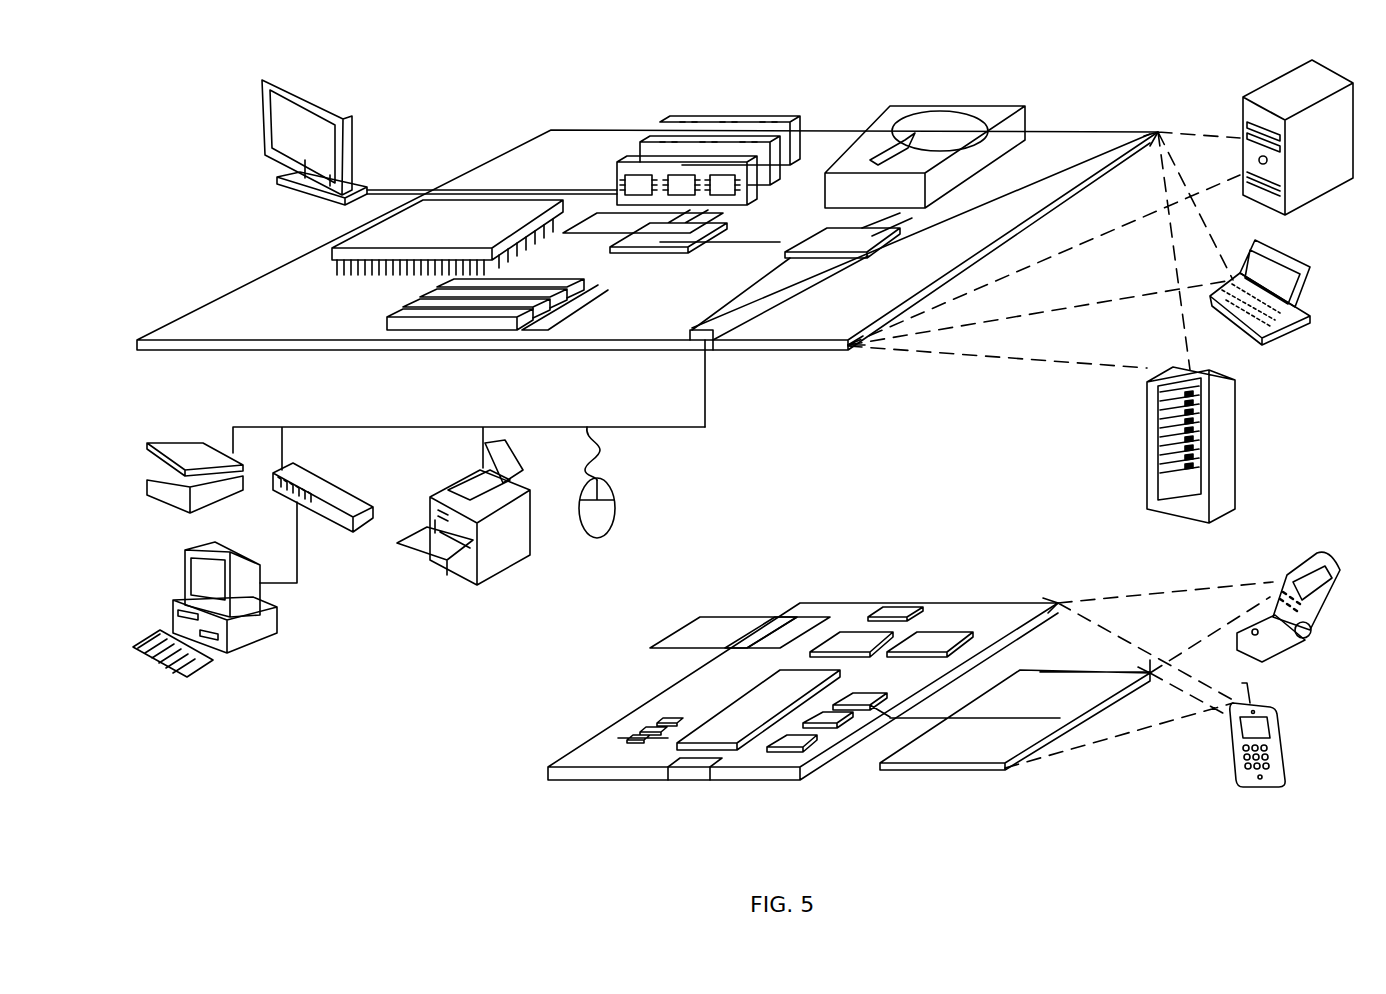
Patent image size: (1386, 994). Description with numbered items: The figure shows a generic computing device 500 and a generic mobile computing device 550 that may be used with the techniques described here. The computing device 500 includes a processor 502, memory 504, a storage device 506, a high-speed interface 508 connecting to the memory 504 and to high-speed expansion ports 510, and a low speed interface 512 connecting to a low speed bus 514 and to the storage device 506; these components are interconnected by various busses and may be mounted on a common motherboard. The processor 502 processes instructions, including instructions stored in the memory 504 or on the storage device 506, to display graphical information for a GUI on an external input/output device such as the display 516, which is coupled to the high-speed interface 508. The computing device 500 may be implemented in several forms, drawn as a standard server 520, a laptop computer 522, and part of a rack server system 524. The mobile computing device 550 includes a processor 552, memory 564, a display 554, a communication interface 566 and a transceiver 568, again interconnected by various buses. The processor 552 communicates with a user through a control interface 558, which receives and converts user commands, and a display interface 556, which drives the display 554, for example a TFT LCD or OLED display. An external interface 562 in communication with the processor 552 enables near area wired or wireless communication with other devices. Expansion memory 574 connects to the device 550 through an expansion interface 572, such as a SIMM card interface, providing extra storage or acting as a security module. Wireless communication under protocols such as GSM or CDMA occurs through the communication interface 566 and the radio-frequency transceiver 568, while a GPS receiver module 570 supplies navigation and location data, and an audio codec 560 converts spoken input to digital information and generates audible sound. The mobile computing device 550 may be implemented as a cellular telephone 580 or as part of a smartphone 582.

The computing device 500 is at (462, 103).
The processor 502 is at (332, 251).
The memory 504 is at (678, 125).
The storage device 506 is at (914, 127).
The high-speed interface 508 is at (640, 233).
The high-speed expansion ports 510 is at (407, 312).
The low speed interface 512 is at (824, 234).
The low speed bus 514 is at (713, 341).
The display 516 is at (270, 77).
The standard server 520 is at (1243, 113).
The laptop computer 522 is at (1310, 274).
The rack server system 524 is at (1147, 470).
The mobile computing device 550 is at (524, 779).
The processor 552 is at (730, 733).
The display 554 is at (975, 753).
The display interface 556 is at (798, 741).
The control interface 558 is at (862, 700).
The audio codec 560 is at (863, 698).
The external interface 562 is at (693, 772).
The memory 564 is at (643, 724).
The communication interface 566 is at (850, 640).
The transceiver 568 is at (933, 640).
The GPS receiver module 570 is at (900, 603).
The expansion interface 572 is at (775, 617).
The expansion memory 574 is at (700, 617).
The cellular telephone 580 is at (1293, 553).
The smartphone 582 is at (1232, 738).